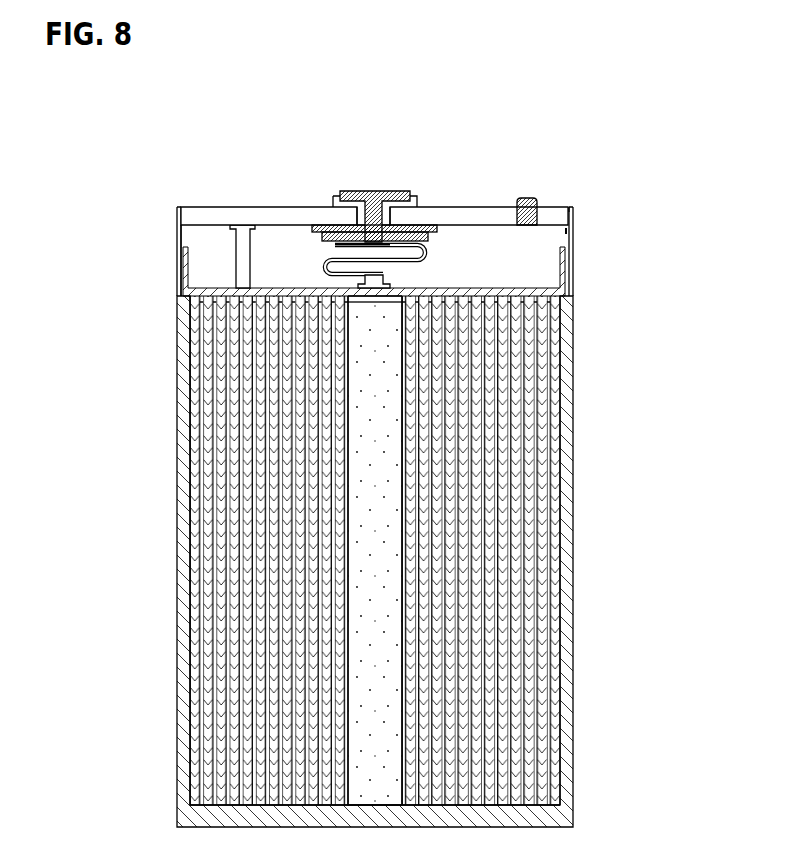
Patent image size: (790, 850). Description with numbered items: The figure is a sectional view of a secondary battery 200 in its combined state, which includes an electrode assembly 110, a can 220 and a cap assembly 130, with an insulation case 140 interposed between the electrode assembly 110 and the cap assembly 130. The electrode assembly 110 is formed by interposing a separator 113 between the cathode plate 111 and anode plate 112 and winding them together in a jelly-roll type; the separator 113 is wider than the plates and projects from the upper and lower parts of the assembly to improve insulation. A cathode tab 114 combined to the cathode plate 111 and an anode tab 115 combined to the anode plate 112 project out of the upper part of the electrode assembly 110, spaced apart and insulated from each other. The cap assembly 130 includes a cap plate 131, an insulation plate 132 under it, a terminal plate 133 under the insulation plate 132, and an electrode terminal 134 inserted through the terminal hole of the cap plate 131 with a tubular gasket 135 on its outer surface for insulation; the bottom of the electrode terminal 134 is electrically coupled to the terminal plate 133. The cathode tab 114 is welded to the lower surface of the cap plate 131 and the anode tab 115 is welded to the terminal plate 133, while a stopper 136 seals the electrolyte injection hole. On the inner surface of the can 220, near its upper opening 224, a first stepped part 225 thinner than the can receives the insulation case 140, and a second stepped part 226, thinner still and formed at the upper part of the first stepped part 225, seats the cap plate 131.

The secondary battery 200 is at (103, 97).
The electrode assembly 110 is at (648, 358).
The cathode plate 111 is at (552, 362).
The anode plate 112 is at (533, 440).
The separator 113 is at (538, 400).
The cathode tab 114 is at (243, 262).
The anode tab 115 is at (425, 248).
The cap assembly 130 is at (473, 184).
The cap plate 131 is at (231, 216).
The insulation plate 132 is at (315, 227).
The terminal plate 133 is at (323, 237).
The electrode terminal 134 is at (372, 190).
The gasket 135 is at (413, 196).
The stopper 136 is at (527, 196).
The insulation case 140 is at (188, 287).
The can 220 is at (582, 558).
The upper opening 224 is at (202, 238).
The first stepped part 225 is at (566, 230).
The second stepped part 226 is at (563, 206).